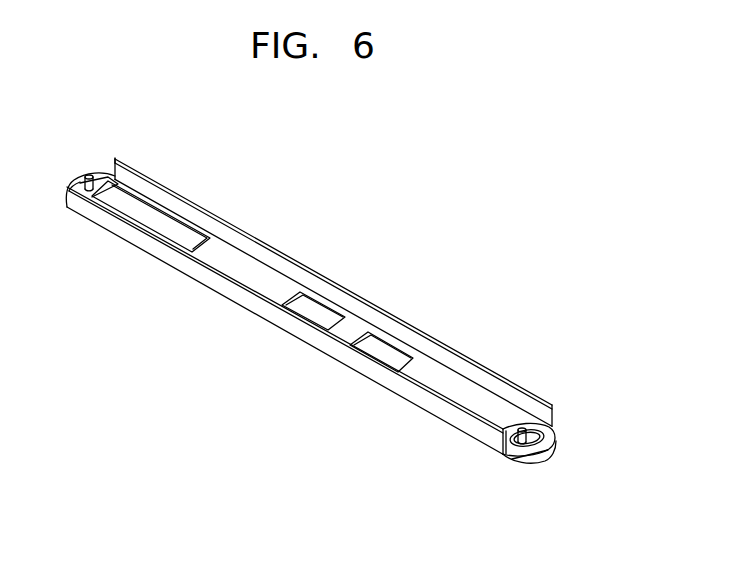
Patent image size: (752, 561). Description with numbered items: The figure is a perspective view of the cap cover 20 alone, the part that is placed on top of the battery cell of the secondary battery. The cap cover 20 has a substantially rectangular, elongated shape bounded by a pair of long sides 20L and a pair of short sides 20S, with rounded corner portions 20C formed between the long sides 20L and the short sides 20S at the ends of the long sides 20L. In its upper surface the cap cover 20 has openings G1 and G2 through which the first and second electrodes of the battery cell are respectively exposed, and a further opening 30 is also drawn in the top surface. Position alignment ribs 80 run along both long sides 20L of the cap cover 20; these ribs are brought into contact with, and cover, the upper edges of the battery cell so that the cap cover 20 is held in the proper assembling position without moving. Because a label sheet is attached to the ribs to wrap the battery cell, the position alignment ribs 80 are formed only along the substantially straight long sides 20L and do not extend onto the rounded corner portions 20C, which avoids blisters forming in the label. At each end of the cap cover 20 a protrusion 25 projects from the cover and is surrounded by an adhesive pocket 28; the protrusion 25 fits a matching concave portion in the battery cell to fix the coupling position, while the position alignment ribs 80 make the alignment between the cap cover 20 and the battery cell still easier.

The cap cover 20 is at (477, 392).
The long sides 20L is at (410, 404).
The rounded corner portions 20C is at (518, 462).
The short sides 20S is at (543, 455).
The protrusion 25 is at (86, 178).
The adhesive pocket 28 is at (533, 440).
The opening 30 is at (382, 355).
The position alignment ribs 80 is at (291, 258).
The opening G1 is at (313, 317).
The opening G2 is at (148, 220).